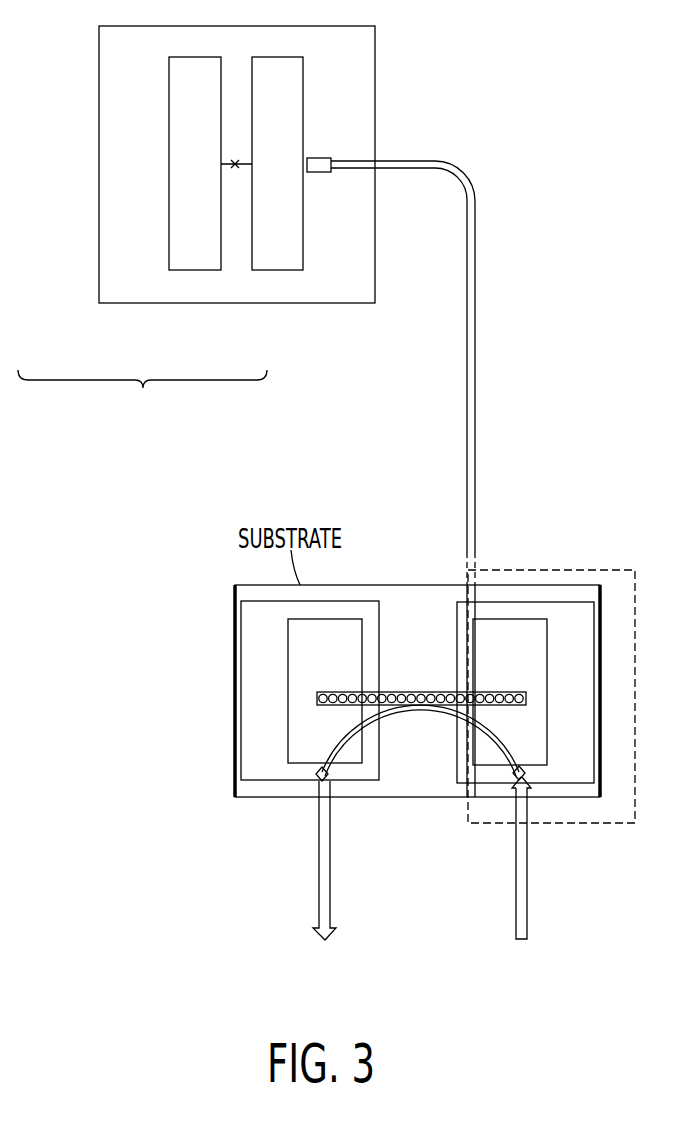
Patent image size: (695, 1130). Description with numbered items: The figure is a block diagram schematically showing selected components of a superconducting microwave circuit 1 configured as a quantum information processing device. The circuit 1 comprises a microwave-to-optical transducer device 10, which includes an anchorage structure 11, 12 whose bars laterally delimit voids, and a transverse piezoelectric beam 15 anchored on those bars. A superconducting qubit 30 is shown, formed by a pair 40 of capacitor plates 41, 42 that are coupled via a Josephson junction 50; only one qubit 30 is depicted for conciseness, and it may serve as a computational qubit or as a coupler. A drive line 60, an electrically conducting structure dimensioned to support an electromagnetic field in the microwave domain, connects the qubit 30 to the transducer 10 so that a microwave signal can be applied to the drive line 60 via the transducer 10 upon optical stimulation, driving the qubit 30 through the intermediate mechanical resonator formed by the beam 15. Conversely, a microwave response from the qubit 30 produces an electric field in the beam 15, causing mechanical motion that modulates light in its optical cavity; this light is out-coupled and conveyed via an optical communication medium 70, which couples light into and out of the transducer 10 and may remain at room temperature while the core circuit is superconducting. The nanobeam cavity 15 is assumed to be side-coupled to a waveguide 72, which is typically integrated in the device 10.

The superconducting microwave circuit 1 is at (192, 484).
The microwave-to-optical transducer device 10 is at (568, 808).
The anchorage structure 11 is at (279, 793).
The anchorage structure 12 is at (560, 597).
The transverse piezoelectric beam 15 is at (388, 691).
The superconducting qubit 30 is at (380, 96).
The pair of capacitor plates 40 is at (142, 398).
The capacitor plate 41 is at (165, 246).
The capacitor plate 42 is at (259, 280).
The Josephson junction 50 is at (237, 175).
The drive line 60 is at (479, 222).
The optical communication medium 70 is at (515, 905).
The waveguide 72 is at (435, 716).